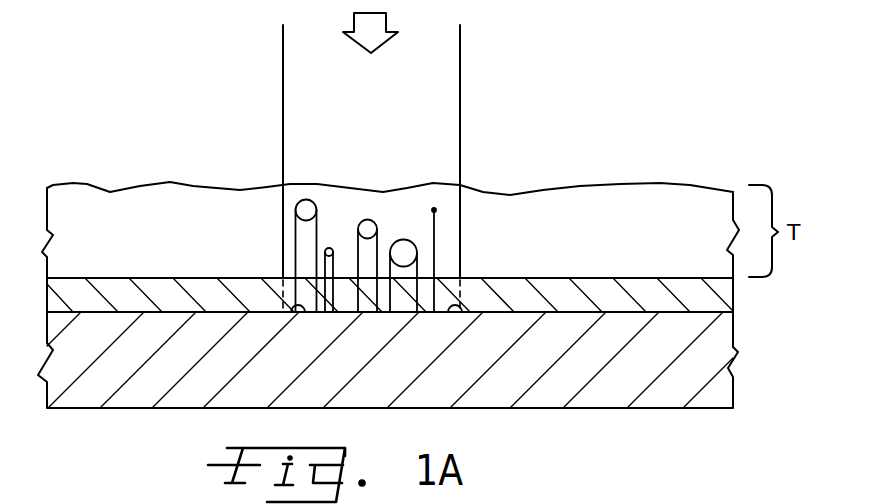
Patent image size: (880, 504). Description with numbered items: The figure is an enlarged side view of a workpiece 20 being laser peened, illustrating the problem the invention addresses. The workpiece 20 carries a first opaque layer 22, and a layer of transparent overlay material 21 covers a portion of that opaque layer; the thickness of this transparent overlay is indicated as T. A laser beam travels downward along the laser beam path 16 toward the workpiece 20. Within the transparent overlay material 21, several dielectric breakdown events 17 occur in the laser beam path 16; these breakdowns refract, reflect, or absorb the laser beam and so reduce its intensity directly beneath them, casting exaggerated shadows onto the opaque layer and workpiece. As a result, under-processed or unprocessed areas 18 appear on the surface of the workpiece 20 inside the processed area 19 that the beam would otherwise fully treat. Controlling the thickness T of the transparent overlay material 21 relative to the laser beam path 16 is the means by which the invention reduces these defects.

The laser beam path 16 is at (430, 97).
The dielectric breakdown events 17 is at (300, 202).
The under-processed or unprocessed areas 18 is at (285, 314).
The processed area 19 is at (455, 314).
The workpiece 20 is at (713, 388).
The transparent overlay material 21 is at (145, 195).
The first opaque layer 22 is at (725, 303).